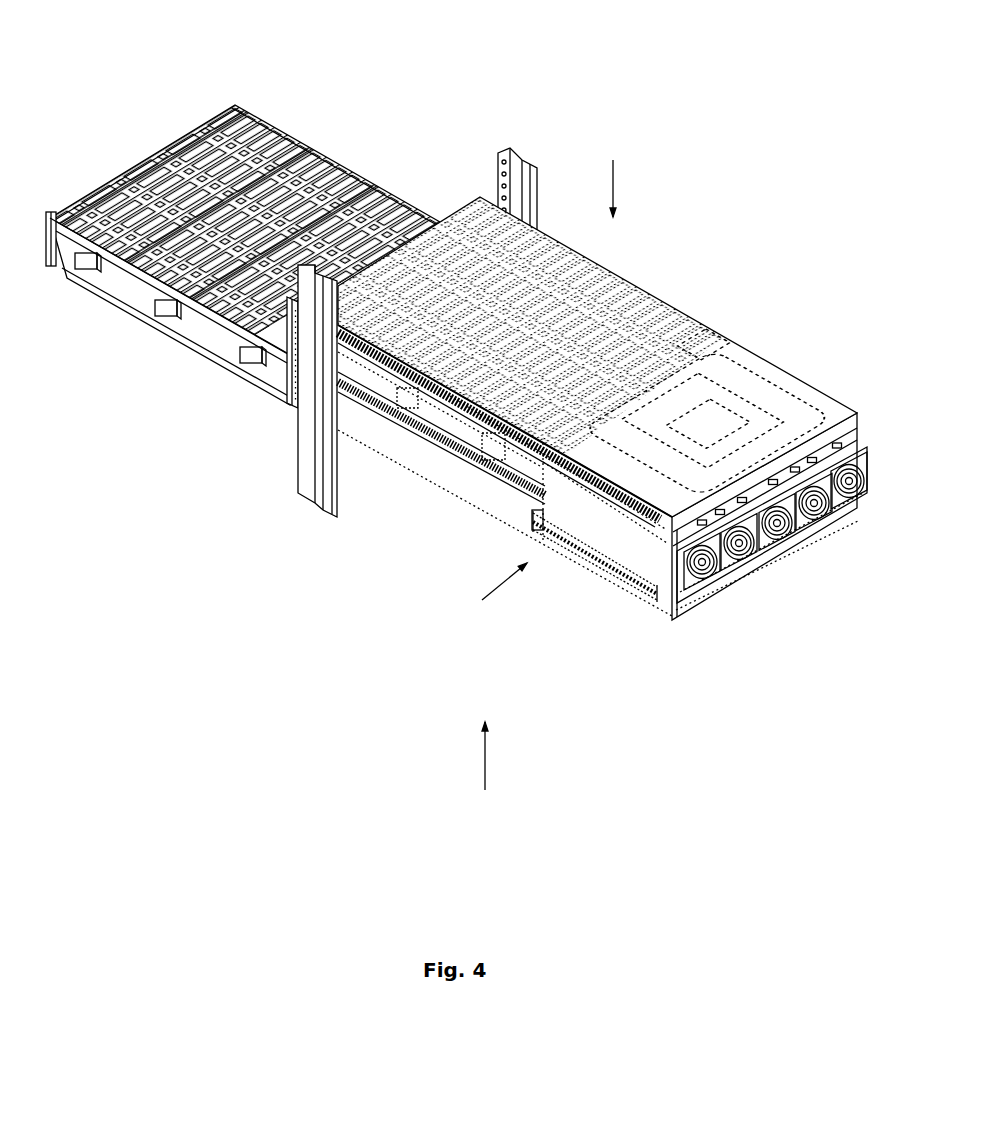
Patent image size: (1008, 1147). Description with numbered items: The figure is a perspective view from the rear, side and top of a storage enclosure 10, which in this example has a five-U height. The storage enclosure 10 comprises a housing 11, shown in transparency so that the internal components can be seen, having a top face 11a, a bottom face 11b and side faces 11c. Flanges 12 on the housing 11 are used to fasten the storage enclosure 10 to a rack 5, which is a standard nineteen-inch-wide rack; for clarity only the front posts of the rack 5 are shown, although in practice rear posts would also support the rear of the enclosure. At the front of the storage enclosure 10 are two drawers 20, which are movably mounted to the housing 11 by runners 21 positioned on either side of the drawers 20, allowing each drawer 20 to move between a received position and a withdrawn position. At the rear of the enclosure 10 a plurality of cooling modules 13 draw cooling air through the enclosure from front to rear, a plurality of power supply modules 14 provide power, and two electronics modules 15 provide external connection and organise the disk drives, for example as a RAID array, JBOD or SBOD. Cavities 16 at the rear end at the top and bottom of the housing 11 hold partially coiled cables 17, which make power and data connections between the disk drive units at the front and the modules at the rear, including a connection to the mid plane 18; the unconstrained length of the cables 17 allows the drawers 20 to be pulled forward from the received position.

The rack 5 is at (515, 172).
The storage enclosure 10 is at (680, 120).
The housing 11 is at (567, 237).
The top face 11a is at (613, 175).
The bottom face 11b is at (485, 770).
The side faces 11c is at (486, 581).
The flanges 12 is at (292, 375).
The cooling modules 13 is at (740, 550).
The power supply modules 14 is at (750, 568).
The electronics modules 15 is at (853, 453).
The cavities 16 is at (735, 408).
The partially coiled cables 17 is at (778, 388).
The mid plane 18 is at (717, 337).
The drawers 20 is at (62, 250).
The runners 21 is at (427, 440).